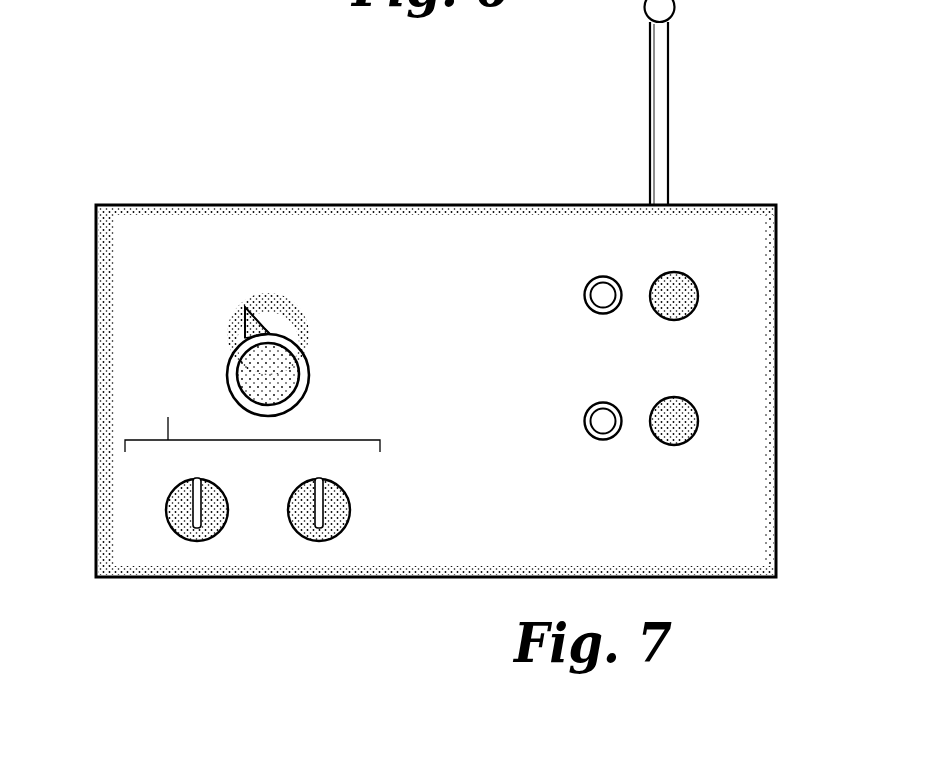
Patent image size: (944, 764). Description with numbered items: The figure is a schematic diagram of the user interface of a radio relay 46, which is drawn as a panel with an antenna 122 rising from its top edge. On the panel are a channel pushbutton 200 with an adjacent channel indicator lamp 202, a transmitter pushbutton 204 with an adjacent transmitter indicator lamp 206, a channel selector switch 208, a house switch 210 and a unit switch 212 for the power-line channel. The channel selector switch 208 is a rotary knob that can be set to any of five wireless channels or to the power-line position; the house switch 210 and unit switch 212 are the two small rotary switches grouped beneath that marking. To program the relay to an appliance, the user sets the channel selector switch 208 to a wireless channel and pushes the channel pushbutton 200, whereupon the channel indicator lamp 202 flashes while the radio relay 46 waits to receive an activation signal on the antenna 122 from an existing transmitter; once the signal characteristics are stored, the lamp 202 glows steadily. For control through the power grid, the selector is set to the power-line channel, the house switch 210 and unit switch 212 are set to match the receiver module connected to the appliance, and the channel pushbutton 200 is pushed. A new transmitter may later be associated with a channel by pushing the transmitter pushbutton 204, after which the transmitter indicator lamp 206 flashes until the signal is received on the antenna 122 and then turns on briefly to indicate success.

The radio relay 46 is at (128, 118).
The antenna 122 is at (670, 98).
The channel pushbutton 200 is at (683, 274).
The channel indicator lamp 202 is at (590, 282).
The transmitter pushbutton 204 is at (683, 399).
The transmitter indicator lamp 206 is at (590, 406).
The channel selector switch 208 is at (311, 375).
The X-10 house switch 210 is at (182, 537).
The X-10 unit switch 212 is at (335, 537).